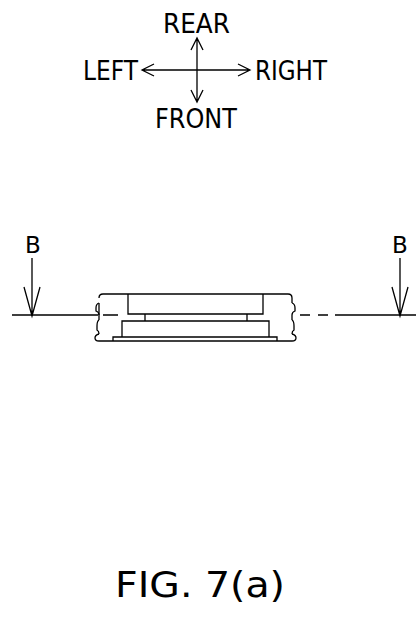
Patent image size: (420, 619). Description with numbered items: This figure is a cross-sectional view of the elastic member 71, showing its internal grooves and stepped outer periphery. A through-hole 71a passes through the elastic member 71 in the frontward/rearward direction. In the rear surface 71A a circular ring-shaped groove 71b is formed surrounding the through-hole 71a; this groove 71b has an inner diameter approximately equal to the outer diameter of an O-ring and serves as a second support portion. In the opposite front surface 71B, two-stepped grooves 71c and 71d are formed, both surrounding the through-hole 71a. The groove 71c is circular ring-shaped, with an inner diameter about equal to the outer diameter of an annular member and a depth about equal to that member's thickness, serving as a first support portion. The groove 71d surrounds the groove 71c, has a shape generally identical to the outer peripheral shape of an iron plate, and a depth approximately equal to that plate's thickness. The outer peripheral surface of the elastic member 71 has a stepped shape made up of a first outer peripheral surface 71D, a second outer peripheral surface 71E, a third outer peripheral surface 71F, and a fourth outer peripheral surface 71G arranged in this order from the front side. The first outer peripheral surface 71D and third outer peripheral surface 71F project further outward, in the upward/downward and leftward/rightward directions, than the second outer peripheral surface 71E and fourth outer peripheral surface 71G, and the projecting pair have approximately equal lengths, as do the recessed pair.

The elastic member 71 is at (297, 202).
The rear surface 71A is at (277, 301).
The front surface 71B is at (290, 341).
The through-hole 71a is at (224, 322).
The groove 71b is at (223, 301).
The groove 71c is at (163, 330).
The groove 71d is at (132, 341).
The first outer peripheral surface 71D is at (97, 340).
The second outer peripheral surface 71E is at (97, 323).
The third outer peripheral surface 71F is at (97, 304).
The fourth outer peripheral surface 71G is at (100, 292).